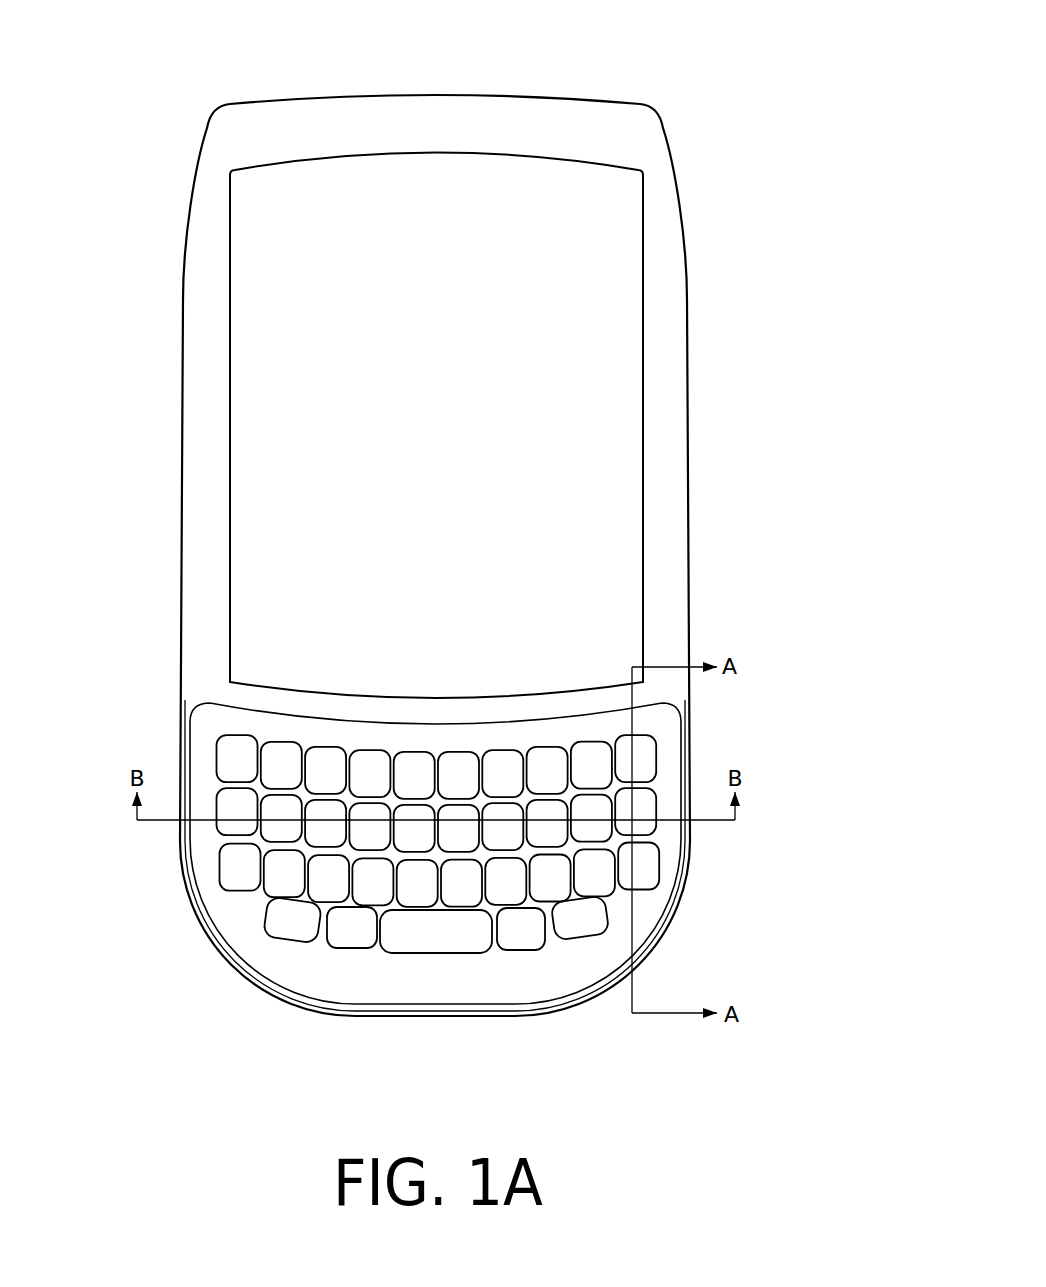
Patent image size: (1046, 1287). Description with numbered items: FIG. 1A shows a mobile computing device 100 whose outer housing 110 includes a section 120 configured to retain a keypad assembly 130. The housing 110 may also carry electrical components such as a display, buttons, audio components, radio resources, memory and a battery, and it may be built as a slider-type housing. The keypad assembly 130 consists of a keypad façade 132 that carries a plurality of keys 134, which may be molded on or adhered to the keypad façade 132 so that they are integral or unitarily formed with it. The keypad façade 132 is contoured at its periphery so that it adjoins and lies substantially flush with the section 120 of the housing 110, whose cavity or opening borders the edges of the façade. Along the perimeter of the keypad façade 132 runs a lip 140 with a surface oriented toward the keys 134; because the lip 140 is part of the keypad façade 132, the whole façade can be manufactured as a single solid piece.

The mobile computing device 100 is at (628, 64).
The housing 110 is at (664, 264).
The section 120 is at (277, 998).
The keypad assembly 130 is at (210, 725).
The keypad façade 132 is at (357, 962).
The keys 134 is at (522, 922).
The lip 140 is at (220, 920).